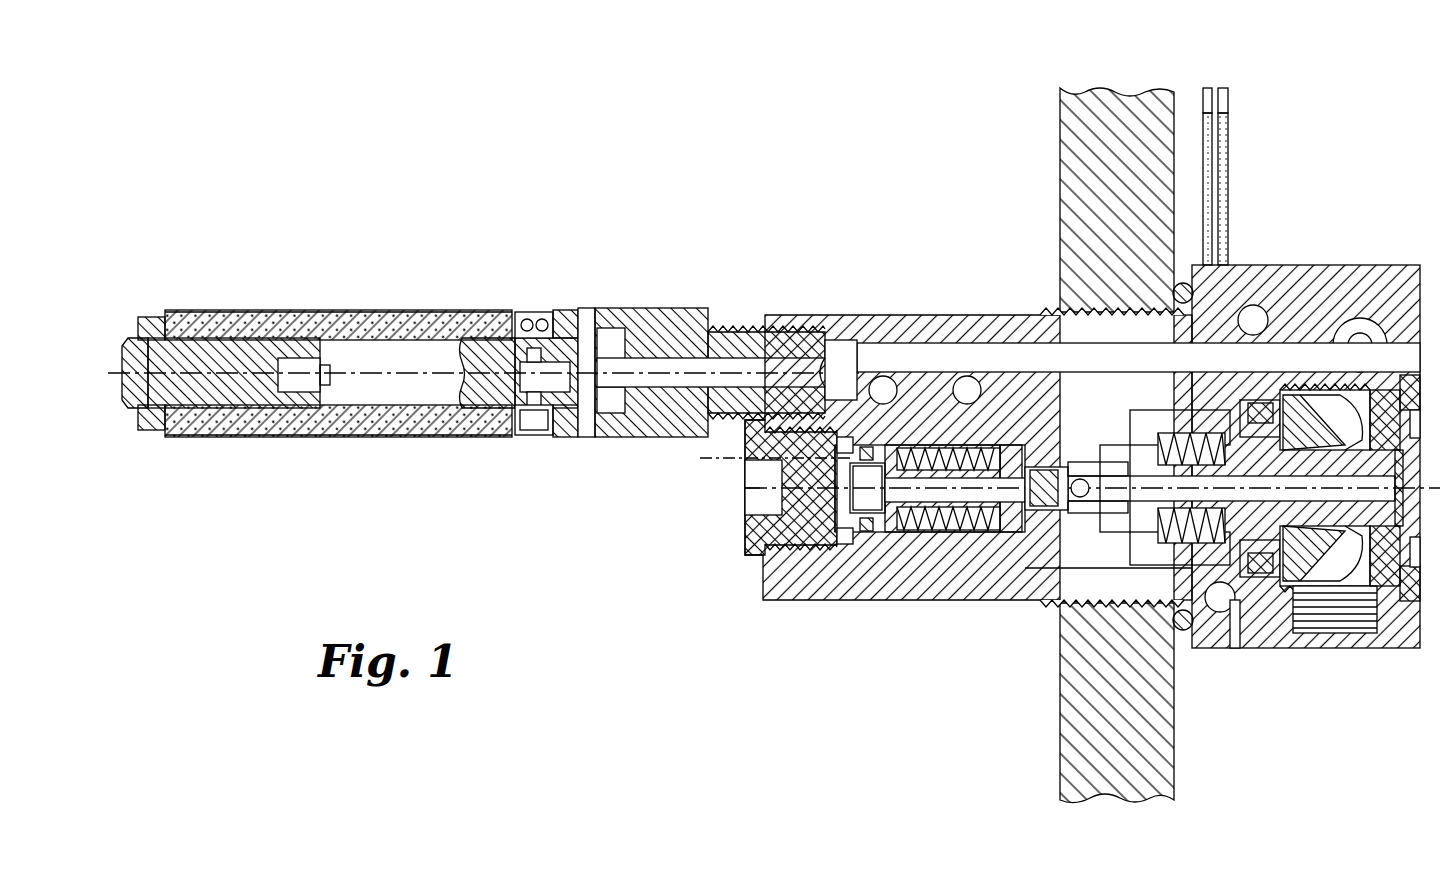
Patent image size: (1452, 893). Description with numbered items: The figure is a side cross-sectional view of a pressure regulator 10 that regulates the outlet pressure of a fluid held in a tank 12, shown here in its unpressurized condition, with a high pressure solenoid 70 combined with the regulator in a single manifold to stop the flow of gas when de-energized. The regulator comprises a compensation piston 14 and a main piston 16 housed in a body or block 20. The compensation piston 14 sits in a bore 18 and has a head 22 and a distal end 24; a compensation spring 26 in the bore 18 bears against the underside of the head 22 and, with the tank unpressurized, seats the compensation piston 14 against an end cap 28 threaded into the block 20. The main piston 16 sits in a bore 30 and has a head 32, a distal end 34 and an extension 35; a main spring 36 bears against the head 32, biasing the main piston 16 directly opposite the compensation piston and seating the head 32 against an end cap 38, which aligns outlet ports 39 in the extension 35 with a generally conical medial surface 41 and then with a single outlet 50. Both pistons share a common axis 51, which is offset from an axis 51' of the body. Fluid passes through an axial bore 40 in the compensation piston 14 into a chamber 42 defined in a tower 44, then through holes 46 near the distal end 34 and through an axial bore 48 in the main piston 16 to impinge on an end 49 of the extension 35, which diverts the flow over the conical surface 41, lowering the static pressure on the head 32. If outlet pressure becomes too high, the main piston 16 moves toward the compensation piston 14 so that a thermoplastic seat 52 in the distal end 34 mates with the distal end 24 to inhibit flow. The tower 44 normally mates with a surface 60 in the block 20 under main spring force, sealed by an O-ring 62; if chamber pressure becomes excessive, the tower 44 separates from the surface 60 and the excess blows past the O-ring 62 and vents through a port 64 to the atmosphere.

The pressure regulator 10 is at (850, 215).
The tank 12 is at (1058, 122).
The compensation piston 14 is at (860, 552).
The main piston 16 is at (1245, 578).
The bore 18 is at (855, 395).
The block 20 is at (765, 582).
The head 22 is at (745, 510).
The distal end 24 is at (1035, 465).
The compensation spring 26 is at (935, 540).
The end cap 28 is at (745, 548).
The bore 30 is at (1182, 632).
The head 32 is at (1290, 440).
The distal end 34 is at (1044, 508).
The extension 35 is at (1425, 470).
The main spring 36 is at (1210, 440).
The end cap 38 is at (1412, 600).
The outlet ports 39 is at (1370, 588).
The axial bore 40 is at (905, 525).
The conical medial surface 41 is at (1338, 440).
The chamber 42 is at (1028, 512).
The tower 44 is at (1065, 480).
The holes 46 is at (1110, 462).
The axial bore 48 is at (1192, 435).
The end 49 is at (1350, 470).
The outlet 50 is at (1335, 633).
The common axis 51 is at (693, 491).
The axis of the body 51' is at (736, 461).
The thermoplastic seat 52 is at (1066, 508).
The surface 60 is at (868, 462).
The O-ring 62 is at (1005, 530).
The port 64 is at (1240, 625).
The high pressure solenoid 70 is at (472, 312).